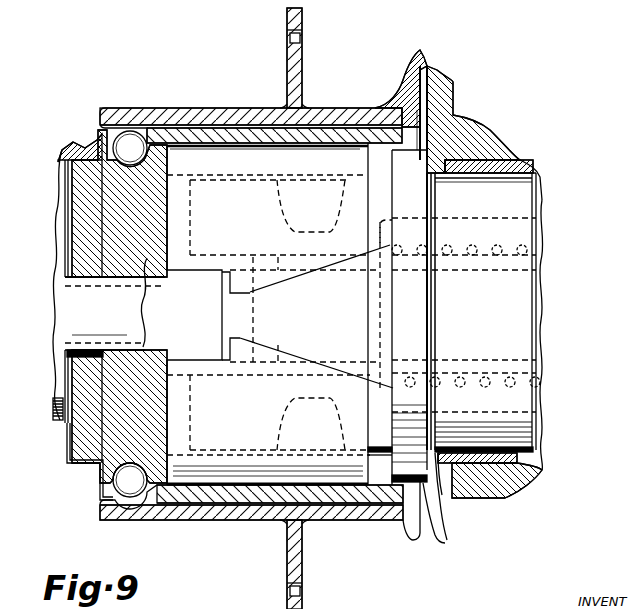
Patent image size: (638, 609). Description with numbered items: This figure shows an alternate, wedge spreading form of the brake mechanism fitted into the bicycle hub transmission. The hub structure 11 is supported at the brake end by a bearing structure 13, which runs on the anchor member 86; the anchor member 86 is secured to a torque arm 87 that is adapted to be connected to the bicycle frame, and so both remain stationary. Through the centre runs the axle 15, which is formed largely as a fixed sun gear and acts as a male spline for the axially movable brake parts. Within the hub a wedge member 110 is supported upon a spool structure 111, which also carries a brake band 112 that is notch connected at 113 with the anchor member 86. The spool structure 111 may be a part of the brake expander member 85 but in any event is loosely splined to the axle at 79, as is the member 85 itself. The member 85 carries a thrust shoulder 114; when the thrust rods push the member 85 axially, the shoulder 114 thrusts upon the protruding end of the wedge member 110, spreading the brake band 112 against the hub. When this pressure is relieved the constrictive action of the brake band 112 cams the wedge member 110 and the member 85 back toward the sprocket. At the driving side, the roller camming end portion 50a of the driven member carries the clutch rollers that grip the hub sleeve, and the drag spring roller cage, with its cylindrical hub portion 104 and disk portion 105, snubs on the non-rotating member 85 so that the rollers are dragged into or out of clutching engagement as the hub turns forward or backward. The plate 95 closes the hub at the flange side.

The hub structure 11 is at (376, 108).
The bearing structure 13 is at (133, 131).
The axle 15 is at (90, 312).
The roller camming end portion 50a is at (480, 148).
The loose spline connection 79 is at (270, 290).
The brake expander member 85 is at (432, 510).
The anchor member 86 is at (97, 457).
The torque arm 87 is at (78, 142).
The housing plate 95 is at (218, 498).
The hub portion 104 is at (497, 467).
The disk portion 105 is at (430, 68).
The wedge member 110 is at (298, 347).
The spool structure 111 is at (287, 202).
The brake band 112 is at (322, 450).
The notch connection 113 is at (207, 353).
The thrust shoulder 114 is at (395, 193).